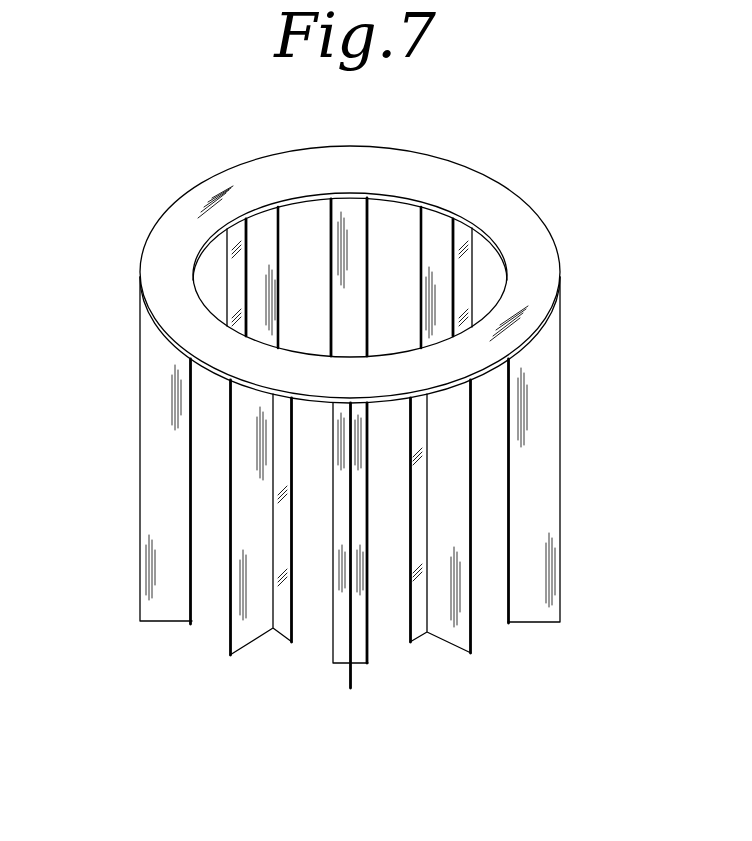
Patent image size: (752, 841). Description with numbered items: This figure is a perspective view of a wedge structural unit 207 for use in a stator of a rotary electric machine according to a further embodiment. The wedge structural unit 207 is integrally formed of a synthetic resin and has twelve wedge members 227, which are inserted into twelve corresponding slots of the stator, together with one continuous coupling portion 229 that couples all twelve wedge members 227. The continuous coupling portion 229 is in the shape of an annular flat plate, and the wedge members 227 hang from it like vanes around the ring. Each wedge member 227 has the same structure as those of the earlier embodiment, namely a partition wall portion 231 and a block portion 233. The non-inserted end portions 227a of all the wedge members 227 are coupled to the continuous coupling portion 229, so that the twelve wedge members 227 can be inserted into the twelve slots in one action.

The wedge structural unit 207 is at (352, 433).
The wedge member 227 is at (352, 433).
The non-inserted end portion 227a is at (263, 213).
The continuous coupling portion 229 is at (173, 237).
The partition wall portion 231 is at (440, 257).
The block portion 233 is at (350, 215).